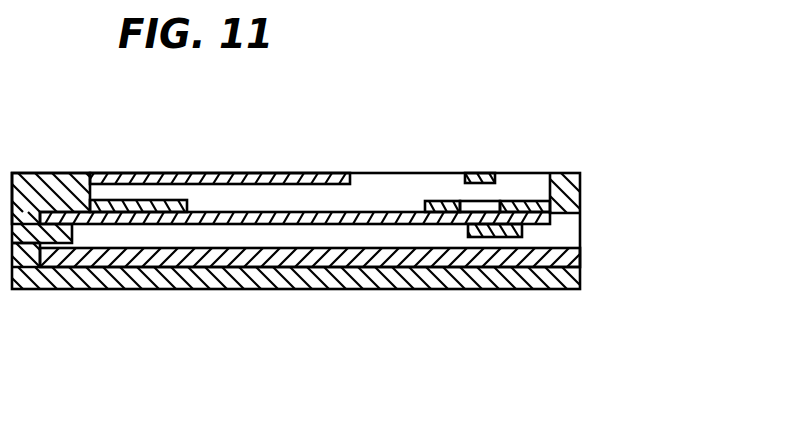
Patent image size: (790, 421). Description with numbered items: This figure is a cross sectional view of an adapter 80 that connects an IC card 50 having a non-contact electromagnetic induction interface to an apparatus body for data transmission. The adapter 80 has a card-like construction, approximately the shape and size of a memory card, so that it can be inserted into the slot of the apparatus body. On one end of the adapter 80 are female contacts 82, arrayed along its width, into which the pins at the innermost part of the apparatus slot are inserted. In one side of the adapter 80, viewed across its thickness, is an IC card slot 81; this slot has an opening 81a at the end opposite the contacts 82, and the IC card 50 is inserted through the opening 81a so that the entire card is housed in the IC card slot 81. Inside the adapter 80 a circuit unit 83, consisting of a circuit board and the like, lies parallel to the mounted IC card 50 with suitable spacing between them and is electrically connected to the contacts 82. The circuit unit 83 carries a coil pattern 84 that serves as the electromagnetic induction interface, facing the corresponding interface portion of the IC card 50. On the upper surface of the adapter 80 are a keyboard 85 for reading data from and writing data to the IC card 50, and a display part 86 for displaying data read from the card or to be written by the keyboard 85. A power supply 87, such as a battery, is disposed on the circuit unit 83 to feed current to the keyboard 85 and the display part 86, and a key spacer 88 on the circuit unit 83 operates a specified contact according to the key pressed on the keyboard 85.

The IC card 50 is at (458, 263).
The adapter 80 is at (347, 150).
The IC card slot 81 is at (362, 237).
The opening 81a is at (581, 249).
The female contacts 82 is at (24, 222).
The circuit unit 83 is at (400, 212).
The coil pattern 84 is at (505, 237).
The keyboard 85 is at (493, 181).
The display part 86 is at (245, 173).
The power supply 87 is at (148, 199).
The key spacer 88 is at (558, 212).